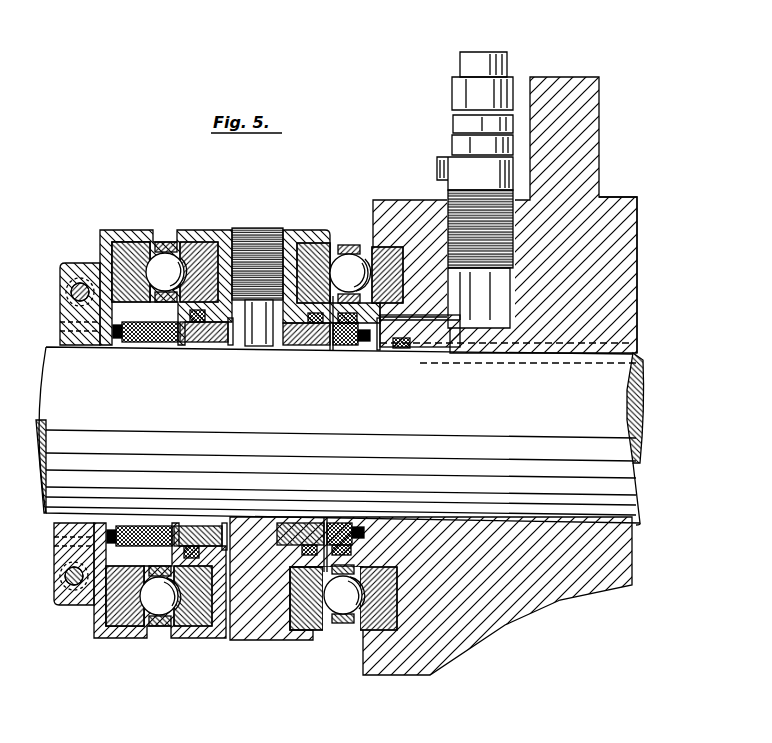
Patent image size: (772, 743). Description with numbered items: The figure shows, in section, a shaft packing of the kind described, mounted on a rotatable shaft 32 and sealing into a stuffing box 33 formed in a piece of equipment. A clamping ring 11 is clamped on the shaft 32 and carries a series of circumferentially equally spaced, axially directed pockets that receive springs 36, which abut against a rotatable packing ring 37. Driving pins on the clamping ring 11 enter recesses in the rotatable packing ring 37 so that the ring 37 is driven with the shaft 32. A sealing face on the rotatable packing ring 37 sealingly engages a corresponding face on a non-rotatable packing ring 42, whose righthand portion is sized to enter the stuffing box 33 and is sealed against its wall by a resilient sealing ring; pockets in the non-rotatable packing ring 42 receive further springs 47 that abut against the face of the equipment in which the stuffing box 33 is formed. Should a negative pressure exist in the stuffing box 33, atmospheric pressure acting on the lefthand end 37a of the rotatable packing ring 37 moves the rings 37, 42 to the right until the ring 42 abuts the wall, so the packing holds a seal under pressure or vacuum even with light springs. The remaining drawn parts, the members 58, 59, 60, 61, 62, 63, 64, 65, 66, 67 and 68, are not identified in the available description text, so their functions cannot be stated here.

The clamping ring 11 is at (76, 343).
The rotatable shaft 32 is at (52, 348).
The stuffing box 33 is at (229, 340).
The springs 36 is at (118, 336).
The rotatable packing ring 37 is at (150, 338).
The lefthand end of the rotatable packing ring 37a is at (346, 345).
The non-rotatable packing ring 42 is at (200, 338).
The springs 47 is at (216, 540).
The plunger shank 58 is at (259, 325).
The threaded adjusting nut 59 is at (262, 236).
The sealing ring 60 is at (402, 346).
The housing shoulder 61 is at (600, 201).
The retaining washer 62 is at (380, 332).
The bearing cap 63 is at (112, 250).
The ball bearing 64 is at (165, 264).
The bearing race 65 is at (200, 250).
The bearing race 66 is at (313, 258).
The housing 67 is at (397, 250).
The sleeve 68 is at (332, 342).